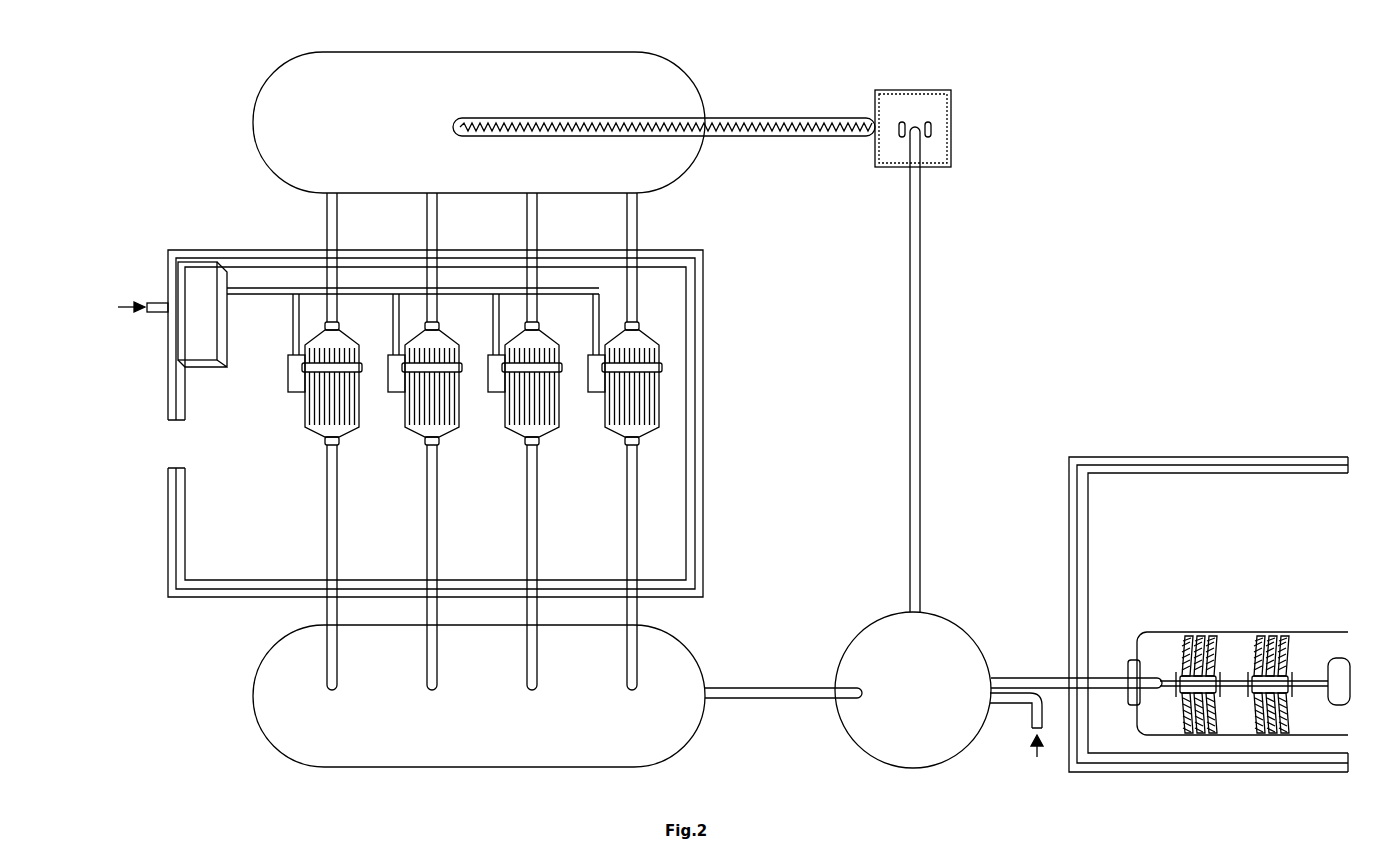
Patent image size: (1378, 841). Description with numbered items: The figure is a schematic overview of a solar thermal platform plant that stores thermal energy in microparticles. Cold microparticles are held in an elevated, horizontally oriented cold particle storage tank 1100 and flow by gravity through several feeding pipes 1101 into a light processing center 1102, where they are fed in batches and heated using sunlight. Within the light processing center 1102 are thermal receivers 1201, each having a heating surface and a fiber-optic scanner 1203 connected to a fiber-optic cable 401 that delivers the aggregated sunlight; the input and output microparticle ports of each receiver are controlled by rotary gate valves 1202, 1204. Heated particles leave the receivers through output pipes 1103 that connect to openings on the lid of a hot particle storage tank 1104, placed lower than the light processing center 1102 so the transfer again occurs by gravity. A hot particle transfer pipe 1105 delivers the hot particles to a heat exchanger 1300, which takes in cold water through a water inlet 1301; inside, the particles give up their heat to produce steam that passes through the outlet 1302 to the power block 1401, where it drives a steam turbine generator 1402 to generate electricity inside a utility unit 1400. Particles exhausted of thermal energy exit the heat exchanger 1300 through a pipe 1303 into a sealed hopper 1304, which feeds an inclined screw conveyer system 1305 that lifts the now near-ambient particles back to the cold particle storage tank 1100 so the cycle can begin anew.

The fiber-optic cable 401 is at (152, 288).
The cold particle storage tank 1100 is at (240, 123).
The feeding pipes 1101 is at (312, 232).
The light processing center 1102 is at (118, 250).
The output pipes 1103 is at (657, 516).
The hot particle storage tank 1104 is at (240, 700).
The hot particle transfer pipe 1105 is at (780, 672).
The thermal receiver 1201 is at (282, 330).
The rotary gate valve 1202 is at (656, 320).
The fiber-optic scanner 1203 is at (680, 368).
The rotary gate valve 1204 is at (657, 441).
The heat exchanger 1300 is at (913, 690).
The water inlet 1301 is at (1018, 732).
The outlet 1302 is at (1030, 662).
The pipe 1303 is at (932, 382).
The hopper 1304 is at (968, 117).
The screw conveyer system 1305 is at (778, 111).
The utility unit 1400 is at (1348, 440).
The power block 1401 is at (1209, 642).
The steam turbine generator 1402 is at (1241, 618).